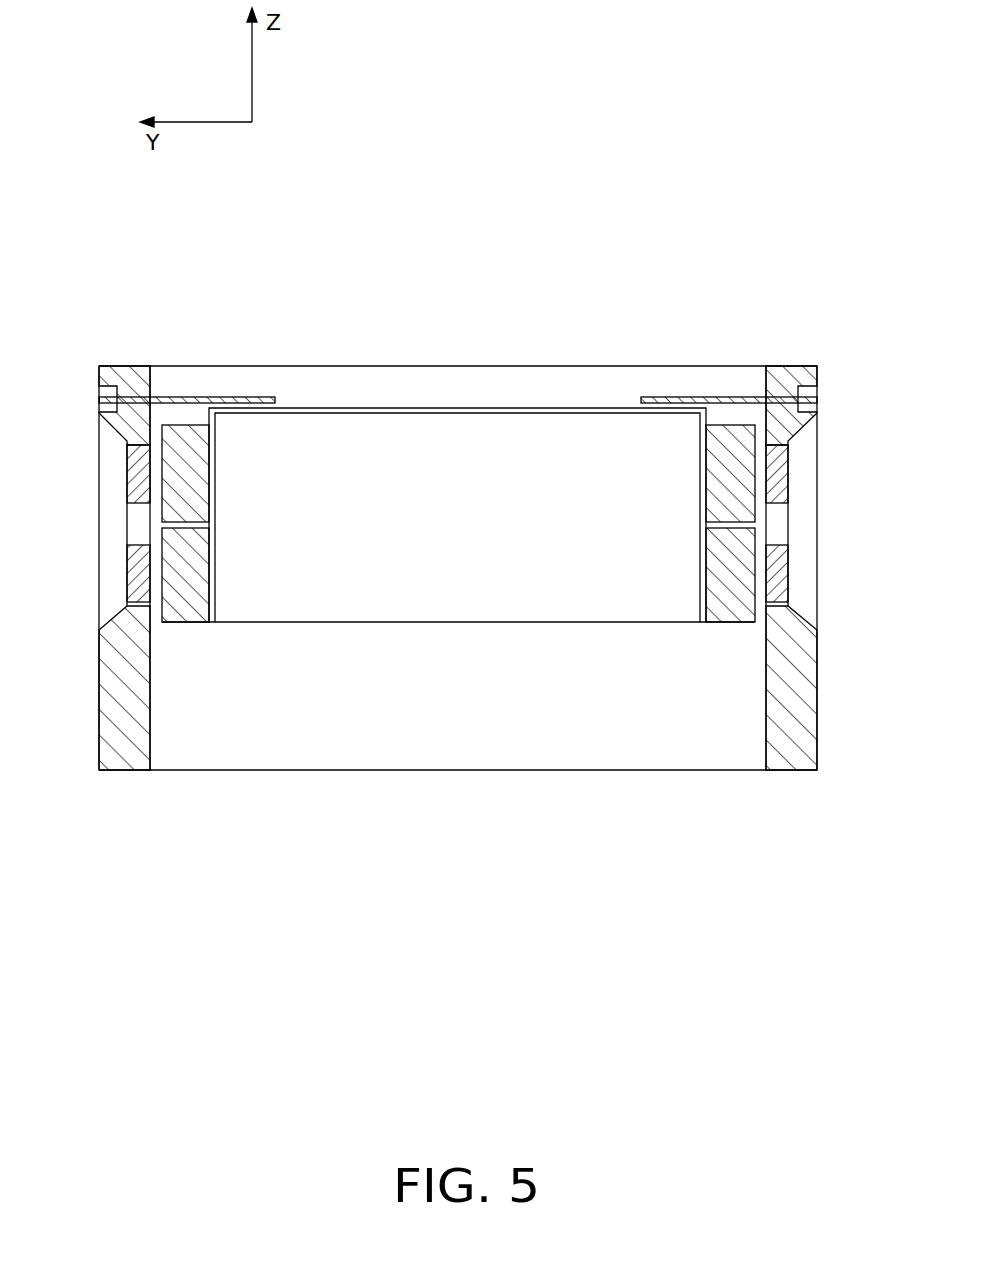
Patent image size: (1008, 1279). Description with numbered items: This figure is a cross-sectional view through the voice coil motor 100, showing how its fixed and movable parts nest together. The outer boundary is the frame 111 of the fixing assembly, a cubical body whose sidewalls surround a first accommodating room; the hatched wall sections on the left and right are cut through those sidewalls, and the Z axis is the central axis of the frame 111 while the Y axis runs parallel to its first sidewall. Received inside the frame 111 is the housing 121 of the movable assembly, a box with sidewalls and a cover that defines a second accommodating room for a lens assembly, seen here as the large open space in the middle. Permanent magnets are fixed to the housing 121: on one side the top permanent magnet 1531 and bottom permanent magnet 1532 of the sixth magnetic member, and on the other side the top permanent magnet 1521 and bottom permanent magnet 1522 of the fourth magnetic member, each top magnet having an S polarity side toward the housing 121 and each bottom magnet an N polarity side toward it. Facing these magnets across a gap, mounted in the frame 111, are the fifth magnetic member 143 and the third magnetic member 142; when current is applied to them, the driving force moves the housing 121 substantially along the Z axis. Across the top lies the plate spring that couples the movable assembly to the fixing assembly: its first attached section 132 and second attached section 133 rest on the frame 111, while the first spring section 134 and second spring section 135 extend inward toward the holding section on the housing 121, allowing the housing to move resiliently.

The voice coil motor 100 is at (440, 207).
The frame 111 is at (112, 710).
The housing 121 is at (213, 422).
The first attached section 132 is at (135, 398).
The second attached section 133 is at (772, 400).
The first spring section 134 is at (190, 397).
The second spring section 135 is at (732, 397).
The third magnetic member 142 is at (777, 487).
The fifth magnetic member 143 is at (140, 466).
The top permanent magnet 1521 is at (727, 482).
The bottom permanent magnet 1522 is at (738, 605).
The top permanent magnet 1531 is at (185, 493).
The bottom permanent magnet 1532 is at (185, 585).